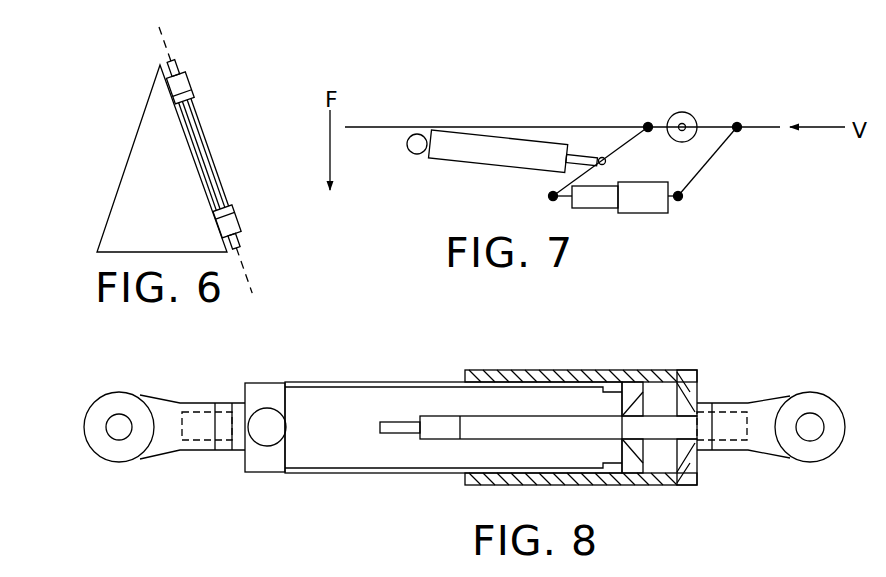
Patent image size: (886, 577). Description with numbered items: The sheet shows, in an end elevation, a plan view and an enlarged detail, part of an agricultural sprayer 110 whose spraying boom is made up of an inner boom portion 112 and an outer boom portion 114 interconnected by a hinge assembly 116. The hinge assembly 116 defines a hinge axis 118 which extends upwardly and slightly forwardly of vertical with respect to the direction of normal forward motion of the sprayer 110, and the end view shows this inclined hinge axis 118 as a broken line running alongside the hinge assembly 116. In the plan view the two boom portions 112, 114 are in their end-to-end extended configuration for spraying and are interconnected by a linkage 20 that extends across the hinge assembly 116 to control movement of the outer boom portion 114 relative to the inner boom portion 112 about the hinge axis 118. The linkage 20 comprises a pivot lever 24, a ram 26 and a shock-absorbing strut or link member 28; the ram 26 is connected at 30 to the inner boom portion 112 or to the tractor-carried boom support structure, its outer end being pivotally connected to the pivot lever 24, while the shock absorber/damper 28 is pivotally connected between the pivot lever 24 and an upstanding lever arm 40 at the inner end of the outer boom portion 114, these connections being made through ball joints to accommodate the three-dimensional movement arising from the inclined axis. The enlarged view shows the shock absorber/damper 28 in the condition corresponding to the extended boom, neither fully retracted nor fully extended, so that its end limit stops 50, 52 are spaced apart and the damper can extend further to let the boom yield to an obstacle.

In FIG. 7, the linkage 20 is at (492, 175).
In FIG. 7, the pivot lever 24 is at (609, 161).
In FIG. 7, the ram 26 is at (464, 145).
In FIG. 7, the shock absorber/damper 28 is at (622, 217).
In FIG. 8, the shock absorber/damper 28 is at (395, 483).
In FIG. 7, the inner end connection 30 is at (416, 150).
In FIG. 7, the upstanding lever arm 40 is at (713, 155).
In FIG. 8, the end limit stop 50 is at (634, 403).
In FIG. 8, the end limit stop 52 is at (697, 390).
In FIG. 6, the agricultural sprayer 110 is at (100, 125).
In FIG. 7, the agricultural sprayer 110 is at (778, 97).
In FIG. 7, the inner boom portion 112 is at (543, 127).
In FIG. 6, the outer boom portion 114 is at (120, 185).
In FIG. 7, the outer boom portion 114 is at (717, 127).
In FIG. 6, the hinge assembly 116 is at (208, 133).
In FIG. 7, the hinge assembly 116 is at (667, 113).
In FIG. 6, the hinge axis 118 is at (247, 265).
In FIG. 7, the hinge axis 118 is at (686, 123).